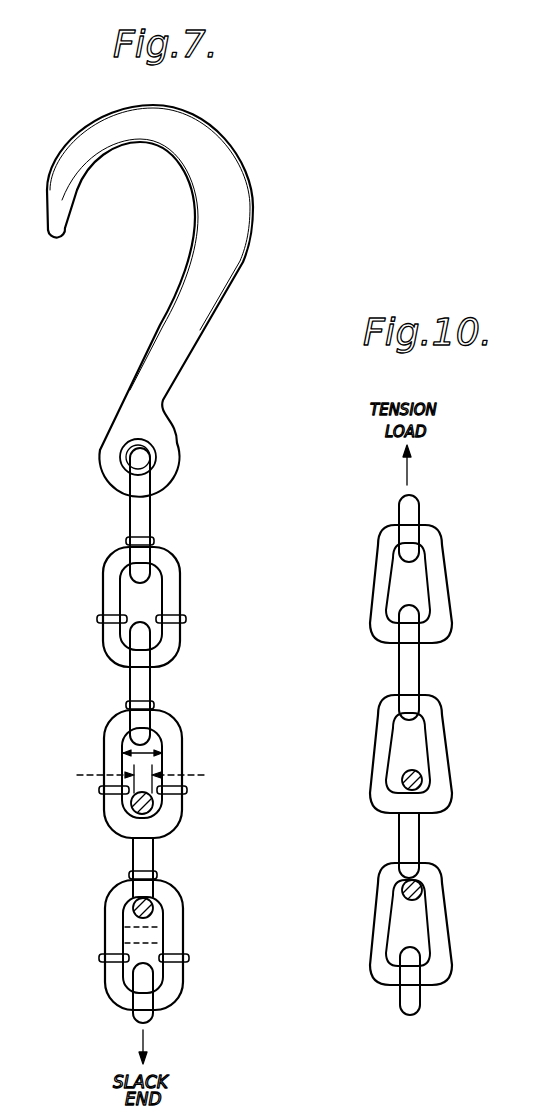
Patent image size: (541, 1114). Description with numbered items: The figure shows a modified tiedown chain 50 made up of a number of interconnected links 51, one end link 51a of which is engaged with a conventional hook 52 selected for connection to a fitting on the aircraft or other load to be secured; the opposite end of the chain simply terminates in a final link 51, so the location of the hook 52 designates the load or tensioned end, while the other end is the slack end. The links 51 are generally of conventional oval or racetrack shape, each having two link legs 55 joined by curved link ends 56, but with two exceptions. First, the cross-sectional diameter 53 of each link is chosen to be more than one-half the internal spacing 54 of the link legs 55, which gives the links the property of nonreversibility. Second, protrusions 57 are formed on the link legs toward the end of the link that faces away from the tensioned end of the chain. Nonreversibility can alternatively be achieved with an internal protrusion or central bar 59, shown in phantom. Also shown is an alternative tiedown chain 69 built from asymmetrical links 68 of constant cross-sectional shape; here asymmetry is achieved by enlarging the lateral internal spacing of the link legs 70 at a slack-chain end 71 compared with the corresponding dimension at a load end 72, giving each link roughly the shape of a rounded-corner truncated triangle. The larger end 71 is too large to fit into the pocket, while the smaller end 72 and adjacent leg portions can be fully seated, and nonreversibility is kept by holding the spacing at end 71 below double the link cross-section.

In FIG. 7, the hook 52 is at (237, 247).
In FIG. 7, the end link 51a is at (103, 583).
In FIG. 7, the links 51 is at (152, 677).
In FIG. 7, the tiedown chain 50 is at (141, 760).
In FIG. 7, the curved link ends 56 is at (117, 712).
In FIG. 7, the protrusions 57 is at (106, 791).
In FIG. 7, the link legs 55 is at (108, 748).
In FIG. 7, the internal spacing dimension 54 is at (148, 753).
In FIG. 7, the cross-sectional diameter dimension 53 is at (156, 775).
In FIG. 7, the central bar 59 is at (150, 925).
In FIG. 10, the asymmetrical links 68 is at (435, 698).
In FIG. 10, the tiedown chain 69 is at (428, 754).
In FIG. 10, the link legs 70 is at (373, 752).
In FIG. 10, the slack-chain end 71 is at (457, 748).
In FIG. 10, the load end 72 is at (392, 692).